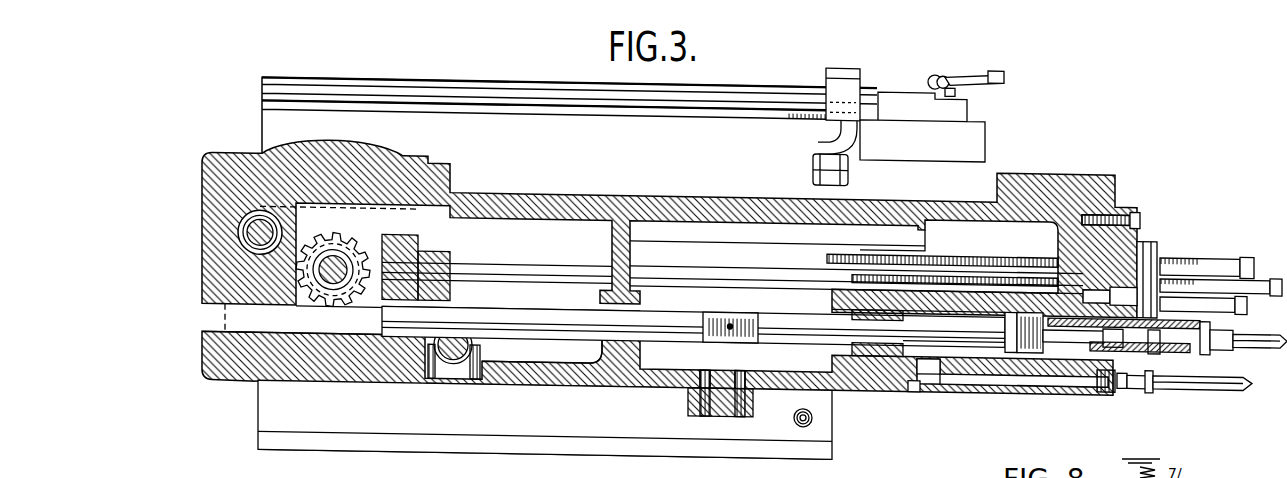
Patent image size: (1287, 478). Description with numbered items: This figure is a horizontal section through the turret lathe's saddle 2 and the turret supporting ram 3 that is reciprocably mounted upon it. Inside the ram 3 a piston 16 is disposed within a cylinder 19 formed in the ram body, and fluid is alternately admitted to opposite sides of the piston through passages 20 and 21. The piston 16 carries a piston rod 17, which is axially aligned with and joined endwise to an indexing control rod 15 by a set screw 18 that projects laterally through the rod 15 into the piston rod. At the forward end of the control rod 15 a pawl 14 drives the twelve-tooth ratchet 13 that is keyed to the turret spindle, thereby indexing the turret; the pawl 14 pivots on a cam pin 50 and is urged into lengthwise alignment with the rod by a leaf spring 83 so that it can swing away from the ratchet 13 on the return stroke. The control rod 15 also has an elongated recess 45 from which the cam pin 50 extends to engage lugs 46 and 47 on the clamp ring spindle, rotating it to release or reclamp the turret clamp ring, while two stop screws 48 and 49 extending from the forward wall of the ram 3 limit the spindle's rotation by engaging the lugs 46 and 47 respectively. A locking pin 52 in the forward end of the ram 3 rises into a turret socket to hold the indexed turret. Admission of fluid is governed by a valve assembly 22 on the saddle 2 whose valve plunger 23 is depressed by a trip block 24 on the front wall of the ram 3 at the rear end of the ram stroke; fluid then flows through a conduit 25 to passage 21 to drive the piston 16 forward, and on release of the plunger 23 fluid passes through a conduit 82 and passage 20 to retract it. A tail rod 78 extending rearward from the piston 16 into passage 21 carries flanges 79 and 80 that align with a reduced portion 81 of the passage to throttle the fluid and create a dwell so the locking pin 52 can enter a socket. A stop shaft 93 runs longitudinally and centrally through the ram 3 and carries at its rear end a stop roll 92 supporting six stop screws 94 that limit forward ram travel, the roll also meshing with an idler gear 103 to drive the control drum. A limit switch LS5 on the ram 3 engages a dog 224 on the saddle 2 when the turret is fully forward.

The saddle 2 is at (753, 81).
The turret supporting ram 3 is at (578, 397).
The ratchet gear 13 is at (352, 264).
The pawl 14 is at (415, 325).
The indexing control rod 15 is at (597, 316).
The piston 16 is at (1020, 350).
The piston rod 17 is at (800, 334).
The set screw 18 is at (727, 322).
The cylinder 19 is at (948, 357).
The passage 20 is at (911, 373).
The passage 21 is at (1165, 333).
The valve assembly 22 is at (832, 431).
The valve plunger 23 is at (803, 425).
The trip block 24 is at (688, 406).
The fluid conduit 25 is at (1260, 334).
The elongated recess 45 is at (520, 333).
The lug 46 is at (453, 333).
The lug 47 is at (476, 351).
The stop screw 48 is at (431, 388).
The stop screw 49 is at (477, 388).
The cam pin 50 is at (465, 326).
The locking pin 52 is at (246, 246).
The tail rod 78 is at (1070, 330).
The flange 79 is at (1154, 334).
The flange 80 is at (1086, 338).
The reduced portion 81 is at (1050, 340).
The conduit 82 is at (1215, 380).
The leaf spring 83 is at (392, 345).
The stop roll 92 is at (1160, 251).
The stop shaft 93 is at (750, 260).
The stop screws 94 is at (1245, 272).
The idler gear 103 is at (1138, 230).
The dog 224 is at (848, 67).
The limit switch LS5 is at (974, 100).